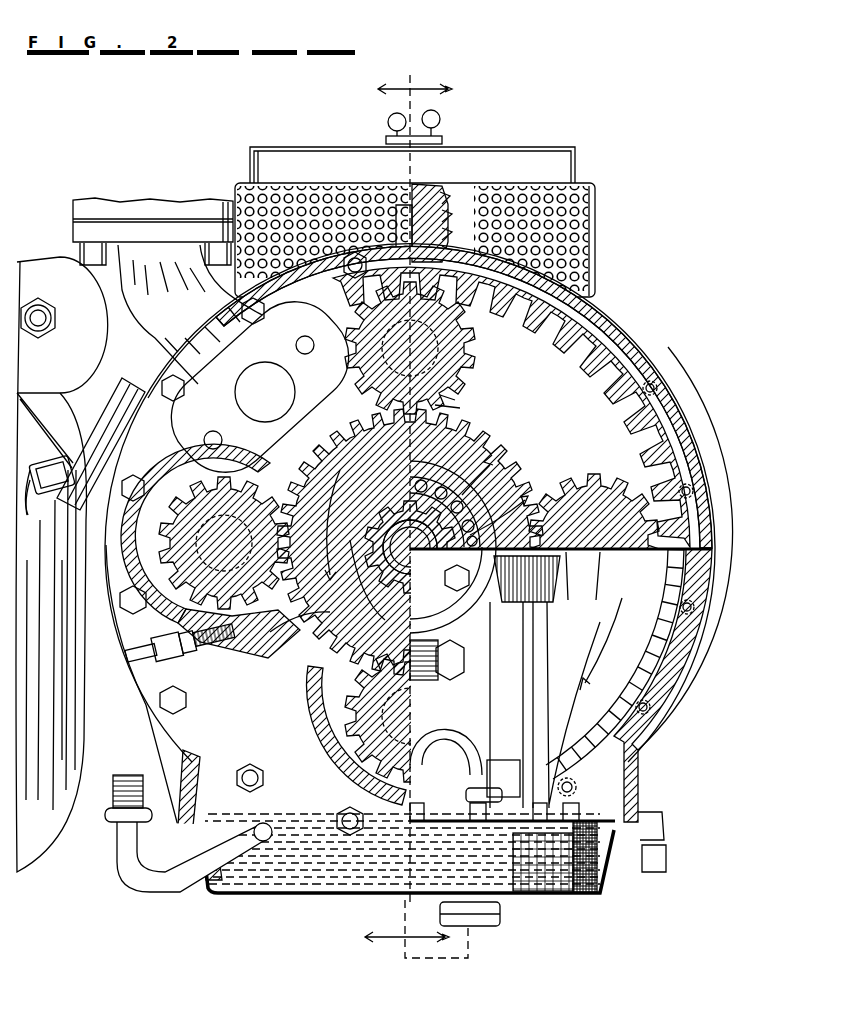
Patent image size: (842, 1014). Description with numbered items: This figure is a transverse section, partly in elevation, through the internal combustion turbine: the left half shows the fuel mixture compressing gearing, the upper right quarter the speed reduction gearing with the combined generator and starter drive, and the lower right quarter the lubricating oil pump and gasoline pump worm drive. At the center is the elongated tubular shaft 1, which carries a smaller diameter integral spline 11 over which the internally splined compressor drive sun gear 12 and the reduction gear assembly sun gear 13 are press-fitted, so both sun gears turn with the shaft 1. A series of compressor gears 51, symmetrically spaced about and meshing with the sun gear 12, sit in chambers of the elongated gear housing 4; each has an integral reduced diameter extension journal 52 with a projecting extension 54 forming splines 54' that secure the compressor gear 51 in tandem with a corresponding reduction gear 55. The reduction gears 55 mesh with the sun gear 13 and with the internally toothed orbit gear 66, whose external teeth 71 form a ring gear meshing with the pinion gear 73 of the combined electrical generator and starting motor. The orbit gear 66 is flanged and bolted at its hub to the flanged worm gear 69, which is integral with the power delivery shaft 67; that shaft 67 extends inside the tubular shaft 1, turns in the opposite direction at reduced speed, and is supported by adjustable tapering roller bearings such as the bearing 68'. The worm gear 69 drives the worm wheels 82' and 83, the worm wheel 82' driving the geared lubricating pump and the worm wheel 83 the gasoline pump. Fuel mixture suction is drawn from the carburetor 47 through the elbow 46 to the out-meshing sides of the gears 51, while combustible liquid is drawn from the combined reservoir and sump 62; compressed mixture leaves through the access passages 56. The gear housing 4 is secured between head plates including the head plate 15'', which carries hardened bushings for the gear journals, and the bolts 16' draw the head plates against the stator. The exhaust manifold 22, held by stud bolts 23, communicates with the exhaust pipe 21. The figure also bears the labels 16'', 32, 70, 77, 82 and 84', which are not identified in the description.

The tubular shaft 1 is at (416, 517).
The gear housing 4 is at (178, 722).
The integral spline 11 is at (304, 636).
The compressor drive sun gear 12 is at (324, 669).
The reduction gear assembly sun gear 13 is at (506, 470).
The head-plate 15'' is at (464, 534).
The bolts 16' is at (243, 543).
The bolt 16'' is at (630, 580).
The exhaust pipe 21 is at (42, 828).
The exhaust manifold 22 is at (62, 430).
The stud-bolts 23 is at (50, 500).
The cover 32 is at (576, 174).
The elbow 46 is at (150, 330).
The carburetor 47 is at (75, 212).
The compressor gears 51 is at (348, 358).
The extension journal means 52 is at (330, 723).
The projecting extensions 54 is at (528, 500).
The splines 54' is at (513, 492).
The reduction gearing gears 55 is at (472, 352).
The access passages 56 is at (290, 472).
The combined reservoir and sump 62 is at (318, 900).
The orbit-gear 66 is at (650, 566).
The power delivery shaft 67 is at (420, 585).
The tapering roller bearing 68' is at (498, 463).
The flanged worm-gear 69 is at (463, 606).
The bearing housing 70 is at (470, 583).
The external teeth 71 is at (655, 484).
The pinion gear 73 is at (418, 200).
The arrow 77 is at (528, 503).
The pump 82 is at (554, 703).
The worm-wheel 82' is at (543, 586).
The worm-wheel 83 is at (434, 682).
The perforated plate 84' is at (436, 240).